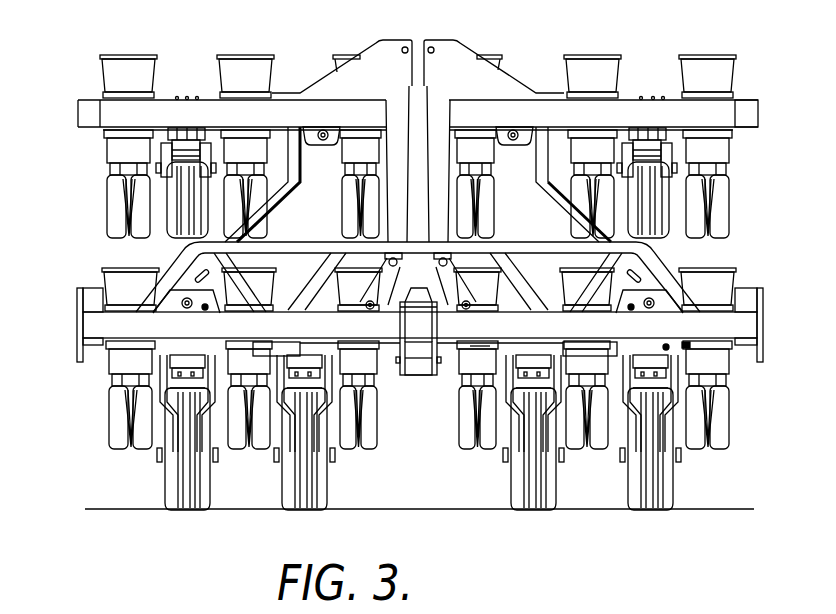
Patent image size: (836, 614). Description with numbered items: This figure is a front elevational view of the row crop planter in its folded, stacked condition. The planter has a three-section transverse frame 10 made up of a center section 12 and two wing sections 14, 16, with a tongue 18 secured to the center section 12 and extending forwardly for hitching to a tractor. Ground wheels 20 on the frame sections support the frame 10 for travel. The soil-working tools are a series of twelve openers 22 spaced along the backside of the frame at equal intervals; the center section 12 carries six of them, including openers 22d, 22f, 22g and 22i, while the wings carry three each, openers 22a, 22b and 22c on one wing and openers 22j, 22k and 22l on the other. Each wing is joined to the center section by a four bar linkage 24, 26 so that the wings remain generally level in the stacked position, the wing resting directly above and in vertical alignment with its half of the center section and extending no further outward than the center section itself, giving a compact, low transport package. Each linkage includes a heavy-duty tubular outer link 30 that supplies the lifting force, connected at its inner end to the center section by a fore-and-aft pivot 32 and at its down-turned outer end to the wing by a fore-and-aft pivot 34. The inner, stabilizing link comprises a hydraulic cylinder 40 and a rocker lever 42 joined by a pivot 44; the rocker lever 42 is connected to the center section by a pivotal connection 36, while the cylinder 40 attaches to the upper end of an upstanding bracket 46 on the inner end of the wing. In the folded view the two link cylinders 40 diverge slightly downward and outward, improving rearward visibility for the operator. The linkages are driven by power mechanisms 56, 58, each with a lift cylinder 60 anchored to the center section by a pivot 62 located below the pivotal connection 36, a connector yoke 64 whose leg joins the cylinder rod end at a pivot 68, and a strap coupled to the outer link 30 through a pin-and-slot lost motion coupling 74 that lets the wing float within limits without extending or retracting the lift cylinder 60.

The frame 10 is at (771, 360).
The center section 12 is at (88, 325).
The wing section 14 is at (87, 113).
The wing section 16 is at (746, 100).
The tongue 18 is at (417, 377).
The ground wheels 20 is at (170, 210).
The openers 22 is at (92, 71).
The opener 22a is at (127, 63).
The opener 22b is at (247, 63).
The opener 22c is at (342, 53).
The opener 22d is at (115, 285).
The opener 22f is at (342, 283).
The opener 22g is at (495, 283).
The opener 22i is at (726, 267).
The opener 22j is at (493, 53).
The opener 22k is at (603, 62).
The opener 22l is at (708, 53).
The four bar linkage 24 is at (290, 157).
The four bar linkage 26 is at (547, 147).
The outer link 30 is at (554, 192).
The fore-and-aft pivot 32 is at (656, 302).
The fore-and-aft pivot 34 is at (508, 130).
The pivotal connection 36 is at (470, 308).
The hydraulic cylinder 40 is at (433, 137).
The rocker lever 42 is at (445, 275).
The pivot 44 is at (438, 270).
The upstanding bracket 46 is at (455, 53).
The power mechanism 56 is at (280, 340).
The power mechanism 58 is at (498, 345).
The lift cylinder 60 is at (564, 345).
The pivot 62 is at (480, 345).
The connector yoke 64 is at (668, 348).
The pivot 68 is at (690, 352).
The lost motion coupling 74 is at (656, 262).